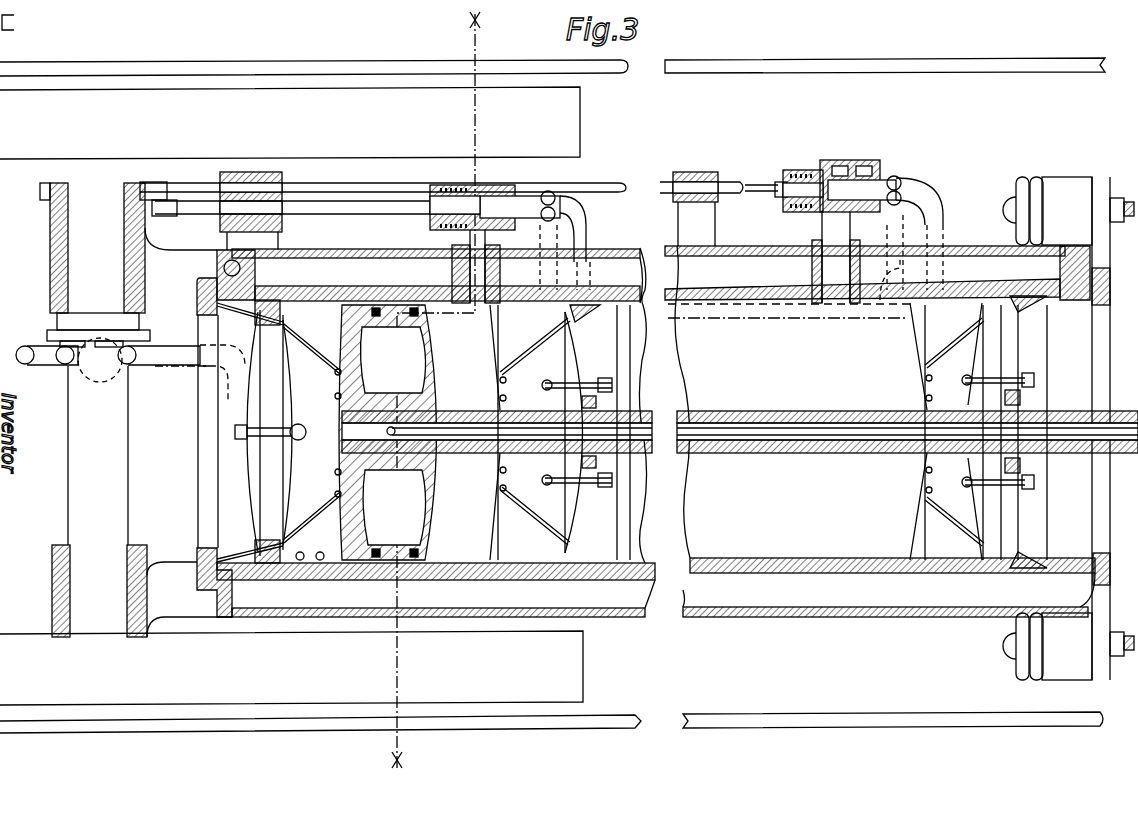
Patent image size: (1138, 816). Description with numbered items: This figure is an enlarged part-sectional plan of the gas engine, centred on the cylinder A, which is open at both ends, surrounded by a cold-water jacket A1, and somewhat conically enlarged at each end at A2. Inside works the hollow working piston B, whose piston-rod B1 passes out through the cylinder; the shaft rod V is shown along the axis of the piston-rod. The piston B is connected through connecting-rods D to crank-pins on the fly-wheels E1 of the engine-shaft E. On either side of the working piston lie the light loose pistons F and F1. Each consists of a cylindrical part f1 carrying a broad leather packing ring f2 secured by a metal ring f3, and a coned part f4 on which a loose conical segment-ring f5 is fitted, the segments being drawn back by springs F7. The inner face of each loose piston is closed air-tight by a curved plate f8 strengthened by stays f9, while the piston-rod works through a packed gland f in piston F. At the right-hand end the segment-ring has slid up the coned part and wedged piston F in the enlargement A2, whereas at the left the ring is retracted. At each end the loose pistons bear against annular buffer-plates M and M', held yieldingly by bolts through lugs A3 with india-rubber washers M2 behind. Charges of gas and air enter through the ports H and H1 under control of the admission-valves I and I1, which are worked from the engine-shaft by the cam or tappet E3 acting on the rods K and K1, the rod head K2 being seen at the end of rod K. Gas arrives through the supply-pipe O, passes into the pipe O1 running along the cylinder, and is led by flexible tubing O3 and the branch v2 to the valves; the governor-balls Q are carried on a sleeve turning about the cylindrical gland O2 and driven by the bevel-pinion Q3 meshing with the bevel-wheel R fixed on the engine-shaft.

The connecting-rods D is at (552, 394).
The fly-wheels E1 is at (291, 396).
The engine-shaft E is at (136, 410).
The cam or tappet E3 is at (133, 239).
The bevel-wheel R is at (102, 332).
The supply-pipe for combustible gas O is at (47, 355).
The governor-balls Q is at (159, 355).
The bevel-pinion Q3 is at (89, 360).
The gas pipe O1 is at (535, 328).
The conical enlargement of the cylinder A2 is at (646, 431).
The cylinder A is at (745, 278).
The cold-water jacket A1 is at (722, 255).
The annular buffer-plate M is at (205, 431).
The annular buffer-plate M' is at (1109, 428).
The lugs on the cylinder A3 is at (1082, 651).
The india-rubber washers M2 is at (1040, 690).
The working piston B is at (388, 432).
The piston-rod B1 is at (855, 416).
The shaft rod V is at (895, 432).
The loose piston F1 is at (258, 525).
The springs F7 is at (262, 462).
The curved plate f8 is at (312, 369).
The stays f9 is at (312, 506).
The conical segment-ring f5 is at (250, 312).
The coned part f4 is at (250, 551).
The cylindrical part f1 is at (312, 549).
The metal ring f3 is at (312, 572).
The packing ring of leather f2 is at (345, 572).
The loose piston F is at (560, 508).
The gland f is at (742, 431).
The valve rod K1 is at (185, 176).
The valve rod K is at (357, 207).
The rod head K2 is at (157, 209).
The admission-valve I is at (507, 180).
The port H is at (476, 266).
The cylindrical gland O2 is at (553, 257).
The pipe elbow v2 is at (764, 248).
The admission-valve I1 is at (875, 158).
The port H1 is at (848, 262).
The flexible tubing O3 is at (915, 252).